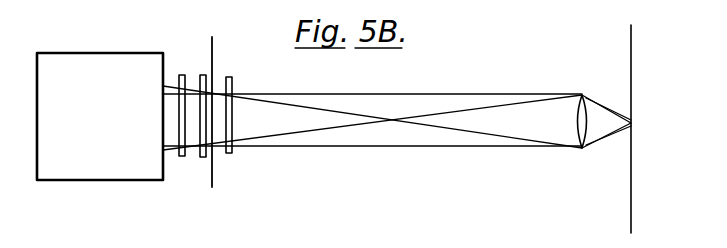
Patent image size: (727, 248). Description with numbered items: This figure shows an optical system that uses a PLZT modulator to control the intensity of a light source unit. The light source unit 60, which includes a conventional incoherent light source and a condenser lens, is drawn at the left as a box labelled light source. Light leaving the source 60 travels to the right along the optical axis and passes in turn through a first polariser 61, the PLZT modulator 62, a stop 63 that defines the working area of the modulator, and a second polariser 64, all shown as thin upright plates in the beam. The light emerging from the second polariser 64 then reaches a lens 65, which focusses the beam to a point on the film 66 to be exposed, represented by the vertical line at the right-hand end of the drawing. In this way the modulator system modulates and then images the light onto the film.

The light source unit 60 is at (104, 180).
The polariser 61 is at (182, 158).
The PLZT modulator 62 is at (203, 159).
The stop 63 is at (212, 186).
The polariser 64 is at (229, 155).
The lens 65 is at (582, 150).
The film 66 is at (631, 37).